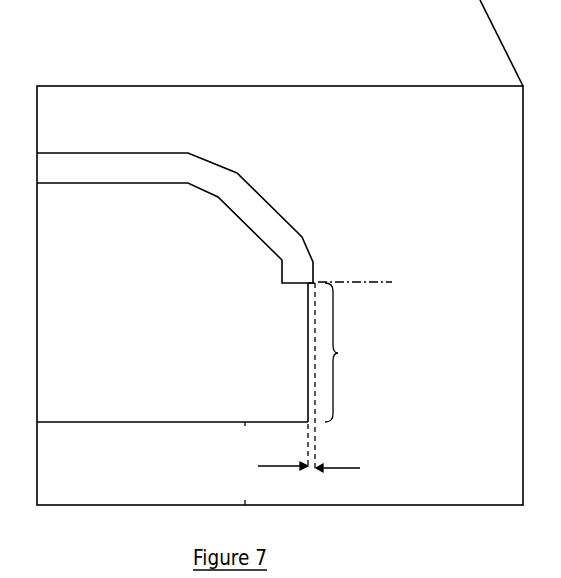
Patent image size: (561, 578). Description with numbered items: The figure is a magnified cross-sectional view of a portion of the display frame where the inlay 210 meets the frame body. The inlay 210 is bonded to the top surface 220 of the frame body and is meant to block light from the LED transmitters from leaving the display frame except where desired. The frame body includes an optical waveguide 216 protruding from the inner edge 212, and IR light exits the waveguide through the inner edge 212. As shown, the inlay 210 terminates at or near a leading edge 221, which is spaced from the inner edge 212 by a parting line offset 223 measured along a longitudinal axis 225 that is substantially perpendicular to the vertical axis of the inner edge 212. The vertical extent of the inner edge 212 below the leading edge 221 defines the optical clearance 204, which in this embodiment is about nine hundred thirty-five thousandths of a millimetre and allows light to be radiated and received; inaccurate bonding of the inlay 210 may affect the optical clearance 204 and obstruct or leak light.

The optical clearance 204 is at (355, 352).
The inlay 210 is at (169, 166).
The inner edge 212 is at (308, 348).
The optical waveguide 216 is at (135, 303).
The top surface 220 is at (95, 181).
The leading edge 221 is at (315, 282).
The parting line offset 223 is at (327, 388).
The longitudinal axis 225 is at (387, 284).